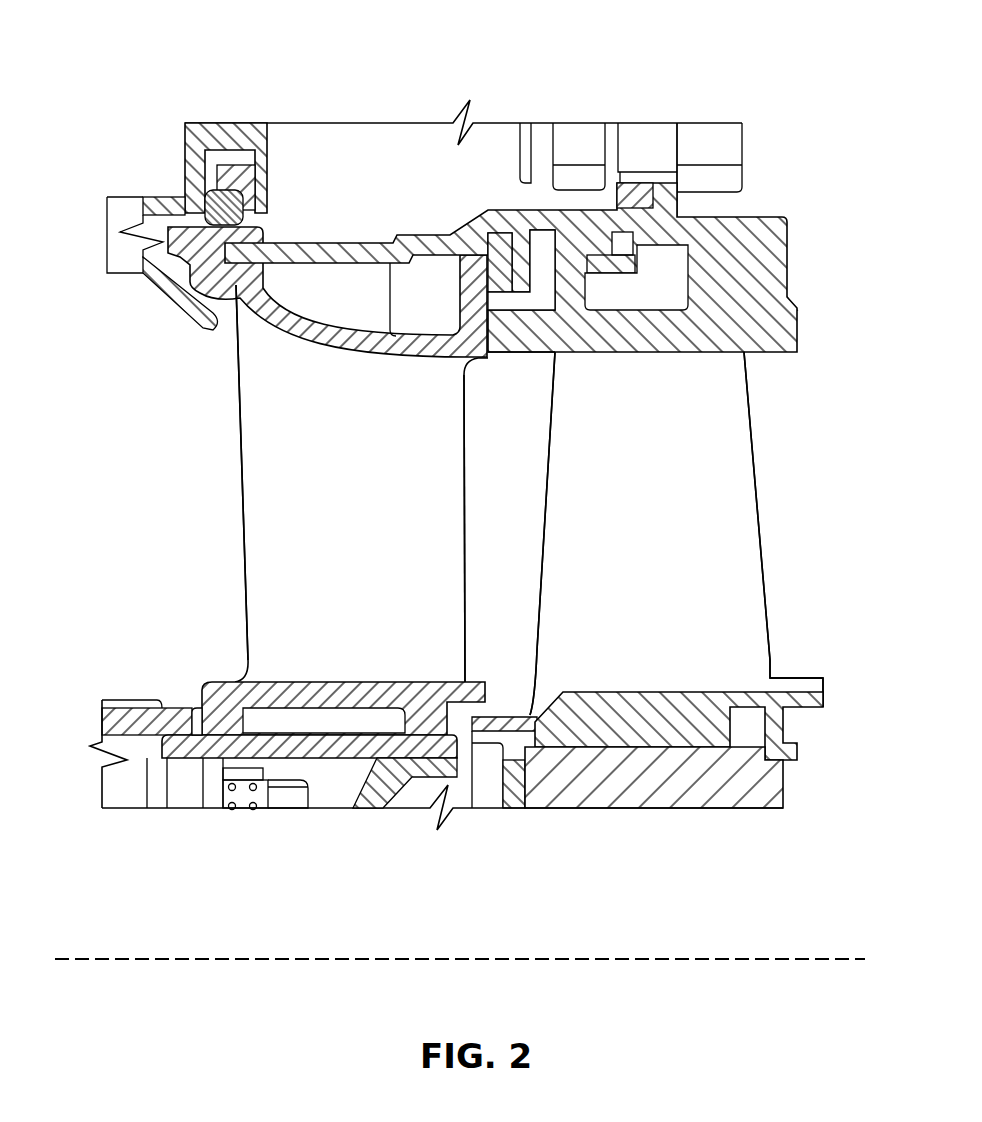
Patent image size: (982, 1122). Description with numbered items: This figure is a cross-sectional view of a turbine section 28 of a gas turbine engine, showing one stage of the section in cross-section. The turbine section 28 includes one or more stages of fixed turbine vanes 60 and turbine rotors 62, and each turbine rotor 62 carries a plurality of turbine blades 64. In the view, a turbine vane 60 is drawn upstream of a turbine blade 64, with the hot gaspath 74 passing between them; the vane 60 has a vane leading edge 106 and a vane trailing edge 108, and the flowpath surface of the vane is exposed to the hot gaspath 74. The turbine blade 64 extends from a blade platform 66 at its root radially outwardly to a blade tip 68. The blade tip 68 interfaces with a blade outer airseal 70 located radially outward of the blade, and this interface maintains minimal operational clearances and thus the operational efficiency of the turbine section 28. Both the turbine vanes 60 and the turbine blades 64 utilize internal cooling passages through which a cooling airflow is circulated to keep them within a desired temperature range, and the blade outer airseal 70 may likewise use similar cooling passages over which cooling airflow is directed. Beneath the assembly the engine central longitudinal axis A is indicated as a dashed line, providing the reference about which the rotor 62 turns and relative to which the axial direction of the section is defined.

The turbine section 28 is at (142, 32).
The turbine vane 60 is at (372, 519).
The turbine rotor 62 is at (790, 518).
The turbine blade 64 is at (666, 518).
The blade platform 66 is at (647, 707).
The blade tip 68 is at (645, 352).
The blade outer airseal 70 is at (765, 330).
The hot gaspath 74 is at (528, 443).
The vane leading edge 106 is at (241, 492).
The vane trailing edge 108 is at (463, 475).
The engine central longitudinal axis A is at (775, 957).